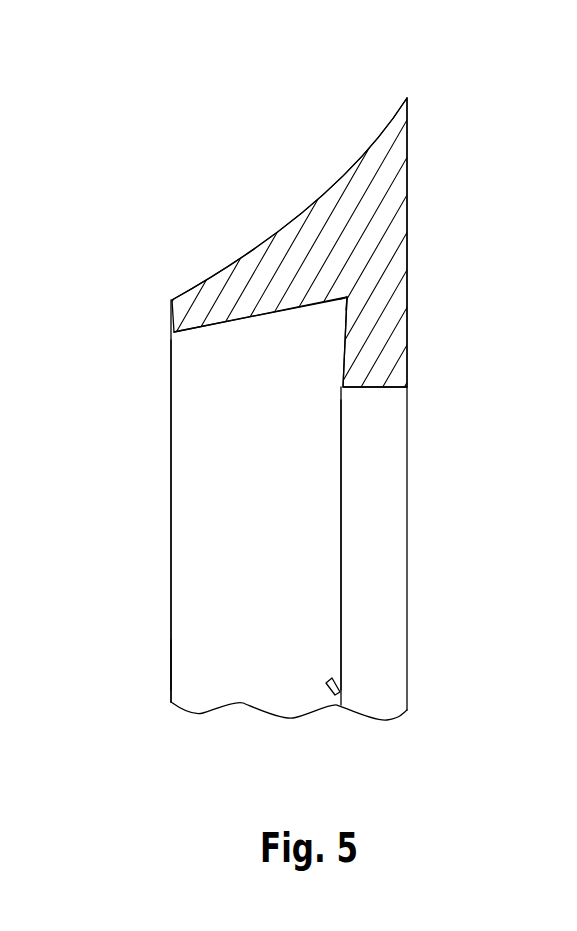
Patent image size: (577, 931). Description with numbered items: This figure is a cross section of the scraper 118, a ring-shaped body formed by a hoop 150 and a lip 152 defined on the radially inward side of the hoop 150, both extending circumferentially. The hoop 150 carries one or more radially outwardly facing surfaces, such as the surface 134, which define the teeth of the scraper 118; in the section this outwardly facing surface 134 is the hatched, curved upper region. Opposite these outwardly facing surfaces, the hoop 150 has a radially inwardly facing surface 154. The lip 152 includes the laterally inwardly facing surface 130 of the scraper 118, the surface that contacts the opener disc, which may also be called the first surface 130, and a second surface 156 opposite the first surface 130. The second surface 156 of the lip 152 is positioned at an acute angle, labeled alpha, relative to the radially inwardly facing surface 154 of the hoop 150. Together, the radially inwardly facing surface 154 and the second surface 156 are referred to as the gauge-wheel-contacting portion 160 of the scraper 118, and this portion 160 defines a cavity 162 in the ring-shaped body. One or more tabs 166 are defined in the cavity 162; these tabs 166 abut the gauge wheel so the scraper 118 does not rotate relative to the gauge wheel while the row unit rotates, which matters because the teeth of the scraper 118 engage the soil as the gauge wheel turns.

The scraper 118 is at (165, 138).
The laterally inwardly facing surface 130 is at (407, 287).
The radially outwardly facing surface 134 is at (293, 225).
The hoop 150 is at (215, 530).
The lip 152 is at (377, 557).
The radially inwardly facing surface 154 is at (242, 323).
The second surface 156 is at (344, 366).
The gauge-wheel-contacting portion 160 is at (347, 290).
The cavity 162 is at (235, 660).
The tab 166 is at (332, 684).